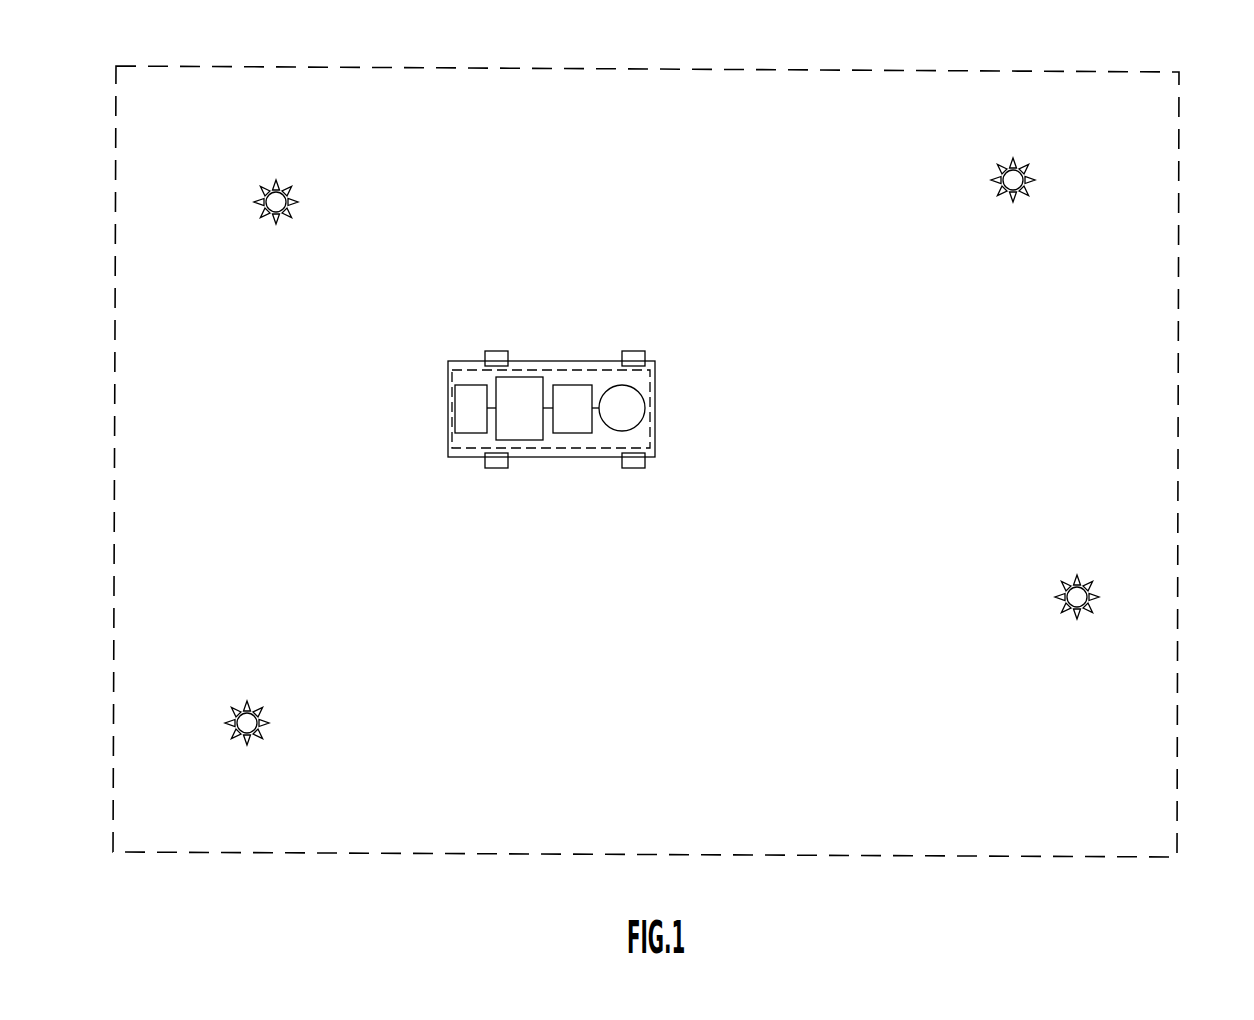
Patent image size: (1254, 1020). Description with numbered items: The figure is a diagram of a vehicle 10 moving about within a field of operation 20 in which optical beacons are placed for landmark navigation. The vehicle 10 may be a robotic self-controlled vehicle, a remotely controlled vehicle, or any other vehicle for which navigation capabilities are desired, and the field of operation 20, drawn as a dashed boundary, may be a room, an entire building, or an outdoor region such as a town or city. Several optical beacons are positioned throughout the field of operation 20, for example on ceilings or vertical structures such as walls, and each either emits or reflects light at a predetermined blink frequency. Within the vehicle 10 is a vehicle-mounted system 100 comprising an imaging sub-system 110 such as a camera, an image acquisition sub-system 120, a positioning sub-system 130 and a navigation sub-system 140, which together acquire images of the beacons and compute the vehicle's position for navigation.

The vehicle 10 is at (446, 489).
The field of operation 20 is at (1220, 352).
The vehicle-mounted system 100 is at (695, 466).
The imaging sub-system 110 is at (675, 392).
The image acquisition sub-system 120 is at (552, 492).
The positioning sub-system 130 is at (523, 390).
The navigation sub-system 140 is at (464, 413).